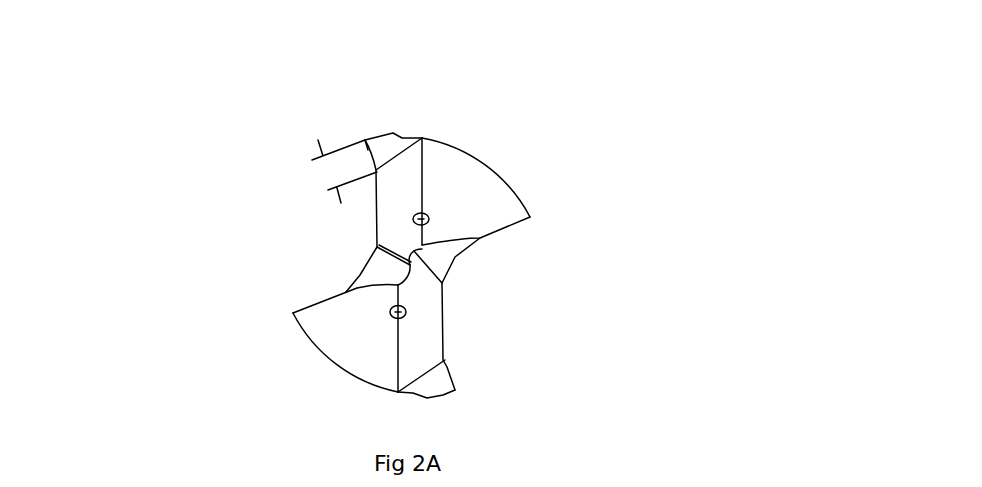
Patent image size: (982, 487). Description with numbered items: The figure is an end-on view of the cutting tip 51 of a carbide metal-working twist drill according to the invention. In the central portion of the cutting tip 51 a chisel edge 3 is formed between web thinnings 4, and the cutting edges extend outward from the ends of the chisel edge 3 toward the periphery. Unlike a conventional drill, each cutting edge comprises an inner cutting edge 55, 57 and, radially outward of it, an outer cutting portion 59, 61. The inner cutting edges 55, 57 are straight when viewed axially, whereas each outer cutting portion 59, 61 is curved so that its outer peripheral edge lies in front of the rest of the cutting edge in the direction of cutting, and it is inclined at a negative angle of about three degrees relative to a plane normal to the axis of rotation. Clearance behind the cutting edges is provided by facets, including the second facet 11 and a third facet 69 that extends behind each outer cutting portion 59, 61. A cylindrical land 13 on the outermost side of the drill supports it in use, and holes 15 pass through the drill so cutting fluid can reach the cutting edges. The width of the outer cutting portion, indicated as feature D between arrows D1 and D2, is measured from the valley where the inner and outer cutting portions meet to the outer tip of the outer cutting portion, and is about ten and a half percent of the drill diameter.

The cutting tip 51 is at (587, 73).
The second facet 11 is at (493, 200).
The web thinning 4 is at (447, 253).
The land 13 is at (387, 135).
The third facet 69 is at (405, 142).
The hole 15 is at (428, 216).
The inner cutting edge 57 is at (443, 323).
The outer cutting portion 61 is at (450, 392).
The inner cutting edge 55 is at (377, 208).
The outer cutting portion 59 is at (370, 152).
The chisel edge 3 is at (377, 247).
The arrow D1 is at (313, 147).
The width of the outer cutting portion D is at (328, 168).
The arrow D2 is at (328, 190).